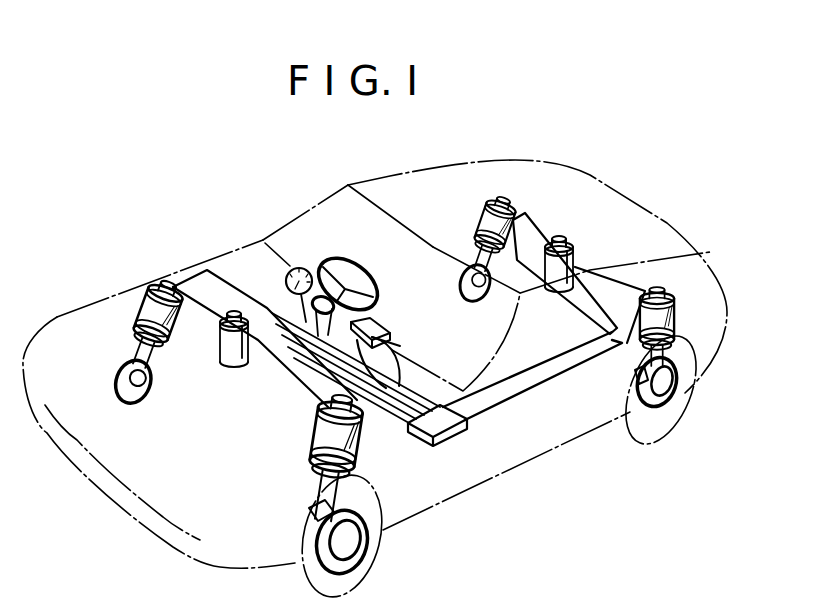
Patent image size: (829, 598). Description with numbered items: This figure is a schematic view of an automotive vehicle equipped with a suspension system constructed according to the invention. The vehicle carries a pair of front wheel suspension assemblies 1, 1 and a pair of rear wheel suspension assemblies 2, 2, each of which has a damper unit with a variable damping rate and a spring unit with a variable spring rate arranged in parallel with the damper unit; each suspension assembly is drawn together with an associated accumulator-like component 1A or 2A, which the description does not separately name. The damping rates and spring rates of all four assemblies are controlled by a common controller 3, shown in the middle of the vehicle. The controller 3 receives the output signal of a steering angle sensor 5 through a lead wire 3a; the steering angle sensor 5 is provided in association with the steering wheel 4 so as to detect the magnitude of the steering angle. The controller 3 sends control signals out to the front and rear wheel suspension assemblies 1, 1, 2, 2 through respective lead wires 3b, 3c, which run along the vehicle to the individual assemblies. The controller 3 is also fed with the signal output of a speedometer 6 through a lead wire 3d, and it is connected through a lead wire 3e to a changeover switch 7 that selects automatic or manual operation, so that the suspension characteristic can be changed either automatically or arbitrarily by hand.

The front wheel suspension assembly 1 is at (147, 318).
The rear accumulator 1A is at (230, 348).
The rear wheel suspension assembly 2 is at (487, 228).
The front accumulator 2A is at (573, 255).
The controller 3 is at (460, 440).
The lead wire 3a is at (392, 350).
The lead wire 3b is at (298, 380).
The lead wire 3c is at (553, 375).
The lead wire 3d is at (387, 405).
The lead wire 3e is at (440, 380).
The steering wheel 4 is at (362, 267).
The steering angle sensor 5 is at (365, 311).
The speedometer 6 is at (302, 267).
The changeover switch 7 is at (385, 327).